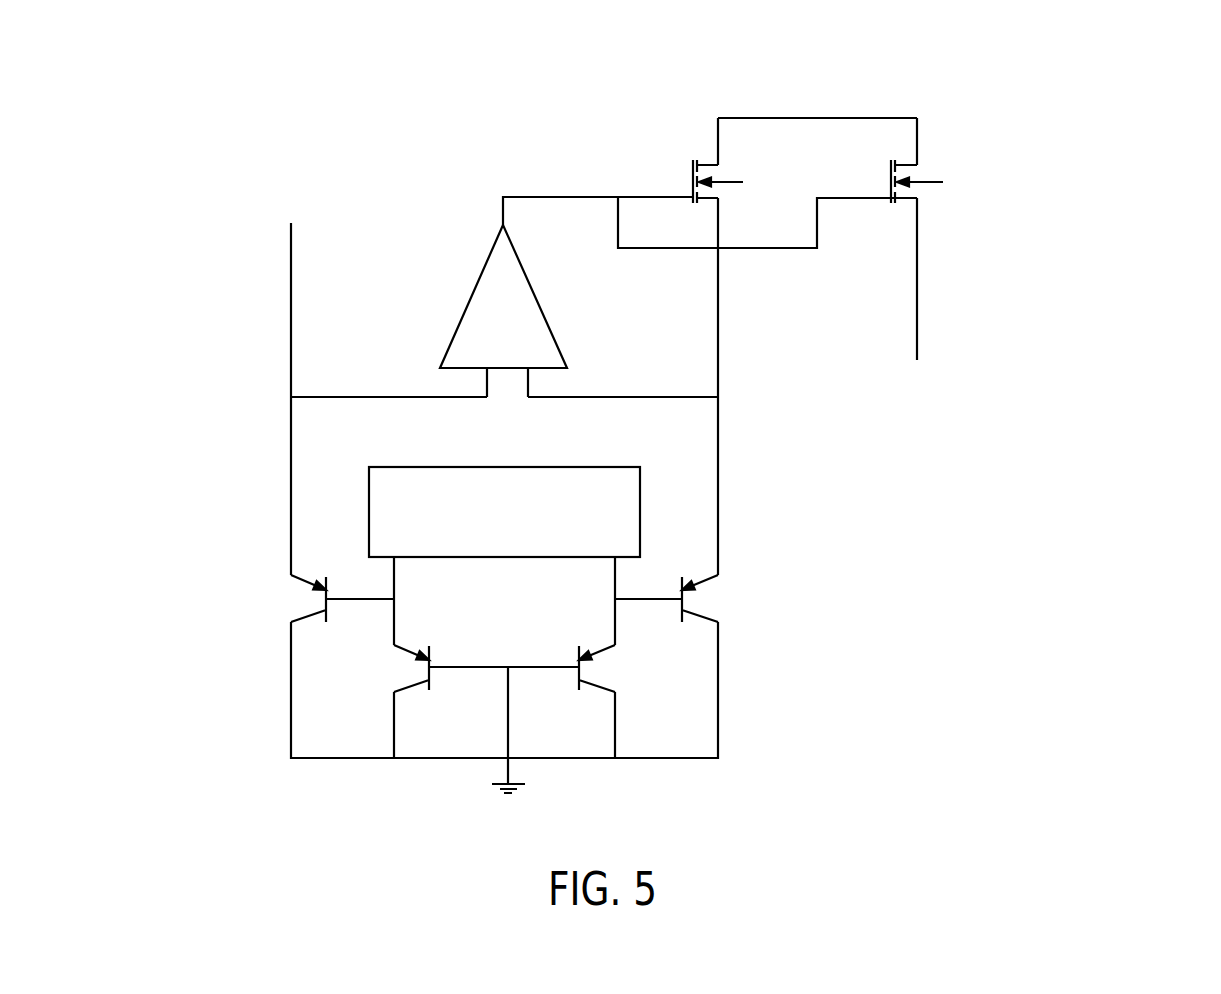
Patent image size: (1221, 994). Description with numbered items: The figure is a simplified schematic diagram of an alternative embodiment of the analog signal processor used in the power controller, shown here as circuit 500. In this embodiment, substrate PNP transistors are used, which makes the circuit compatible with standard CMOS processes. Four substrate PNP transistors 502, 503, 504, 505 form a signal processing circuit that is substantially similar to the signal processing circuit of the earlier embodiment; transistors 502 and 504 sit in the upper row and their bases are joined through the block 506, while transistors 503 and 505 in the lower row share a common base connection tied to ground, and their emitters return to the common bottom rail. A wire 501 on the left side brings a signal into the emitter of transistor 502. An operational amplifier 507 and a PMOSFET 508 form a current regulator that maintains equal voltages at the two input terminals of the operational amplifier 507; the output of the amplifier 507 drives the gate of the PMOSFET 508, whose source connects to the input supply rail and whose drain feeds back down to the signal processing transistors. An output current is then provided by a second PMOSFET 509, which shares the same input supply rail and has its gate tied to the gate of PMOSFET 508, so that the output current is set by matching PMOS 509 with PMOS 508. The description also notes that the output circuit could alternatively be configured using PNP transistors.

The current sensing circuit 500 is at (1098, 66).
The input node wire 501 is at (254, 268).
The substrate PNP transistor 502 is at (286, 606).
The substrate PNP transistor 503 is at (398, 665).
The substrate PNP transistor 504 is at (743, 583).
The substrate PNP transistor 505 is at (628, 672).
The bias block 506 is at (504, 512).
The operational amplifier 507 is at (449, 277).
The PMOSFET 508 is at (653, 164).
The PMOSFET 509 is at (966, 188).